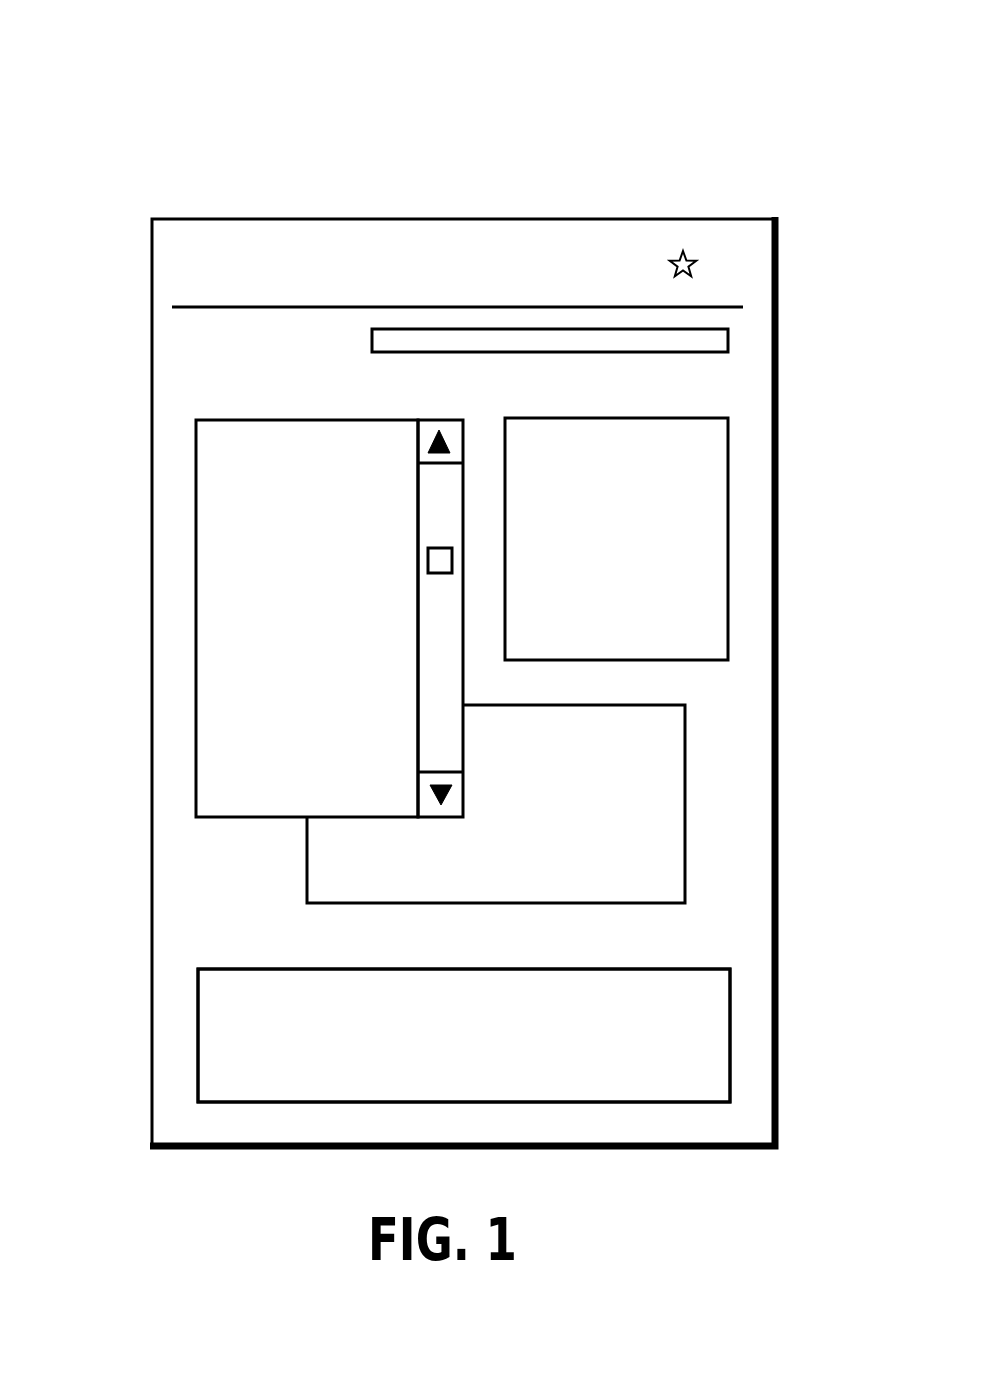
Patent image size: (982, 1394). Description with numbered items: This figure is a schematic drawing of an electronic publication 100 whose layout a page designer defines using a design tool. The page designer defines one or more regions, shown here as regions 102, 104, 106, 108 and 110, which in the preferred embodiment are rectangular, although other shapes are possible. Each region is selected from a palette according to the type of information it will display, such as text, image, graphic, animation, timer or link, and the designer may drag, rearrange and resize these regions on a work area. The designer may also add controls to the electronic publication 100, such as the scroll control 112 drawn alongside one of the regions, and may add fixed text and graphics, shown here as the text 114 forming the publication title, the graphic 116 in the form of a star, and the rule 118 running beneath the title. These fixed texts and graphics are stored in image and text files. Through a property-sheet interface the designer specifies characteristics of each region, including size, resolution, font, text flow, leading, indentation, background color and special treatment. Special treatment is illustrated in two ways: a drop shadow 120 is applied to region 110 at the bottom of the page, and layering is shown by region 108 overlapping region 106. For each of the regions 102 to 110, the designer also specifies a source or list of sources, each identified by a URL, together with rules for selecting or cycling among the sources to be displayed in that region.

The electronic publication 100 is at (462, 576).
The region 102 is at (728, 340).
The region 104 is at (728, 548).
The region 106 is at (685, 820).
The region 108 is at (196, 573).
The region 110 is at (198, 1057).
The scroll control 112 is at (438, 420).
The text 114 is at (258, 265).
The graphic 116 is at (717, 235).
The rule 118 is at (743, 305).
The drop shadow 120 is at (730, 1033).